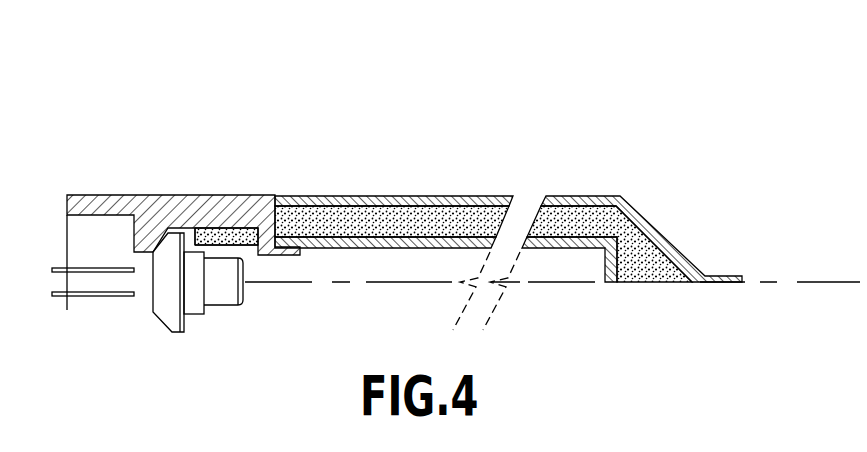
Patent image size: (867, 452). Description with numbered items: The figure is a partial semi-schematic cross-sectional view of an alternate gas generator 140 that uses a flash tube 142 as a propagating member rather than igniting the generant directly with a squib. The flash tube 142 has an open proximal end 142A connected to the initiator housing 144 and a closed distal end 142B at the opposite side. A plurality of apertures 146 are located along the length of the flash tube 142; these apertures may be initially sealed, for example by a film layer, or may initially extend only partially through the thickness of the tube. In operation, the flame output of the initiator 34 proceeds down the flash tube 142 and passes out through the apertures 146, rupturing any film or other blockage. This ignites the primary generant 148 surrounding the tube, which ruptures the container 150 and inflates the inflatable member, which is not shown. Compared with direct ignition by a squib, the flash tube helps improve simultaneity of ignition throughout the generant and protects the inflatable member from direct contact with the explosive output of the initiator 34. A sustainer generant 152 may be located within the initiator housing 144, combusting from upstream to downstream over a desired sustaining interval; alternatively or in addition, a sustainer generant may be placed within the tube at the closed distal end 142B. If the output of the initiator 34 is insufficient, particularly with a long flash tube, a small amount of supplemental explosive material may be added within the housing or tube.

The gas generator 140 is at (456, 197).
The initiator housing 144 is at (187, 213).
The open proximal end 142A is at (282, 218).
The primary generant 148 is at (457, 157).
The container 150 is at (737, 160).
The apertures 146 is at (397, 246).
The sustainer generant 152 is at (288, 322).
The flash tube 142 is at (518, 240).
The closed distal end 142B is at (687, 330).
The initiator 34 is at (90, 350).